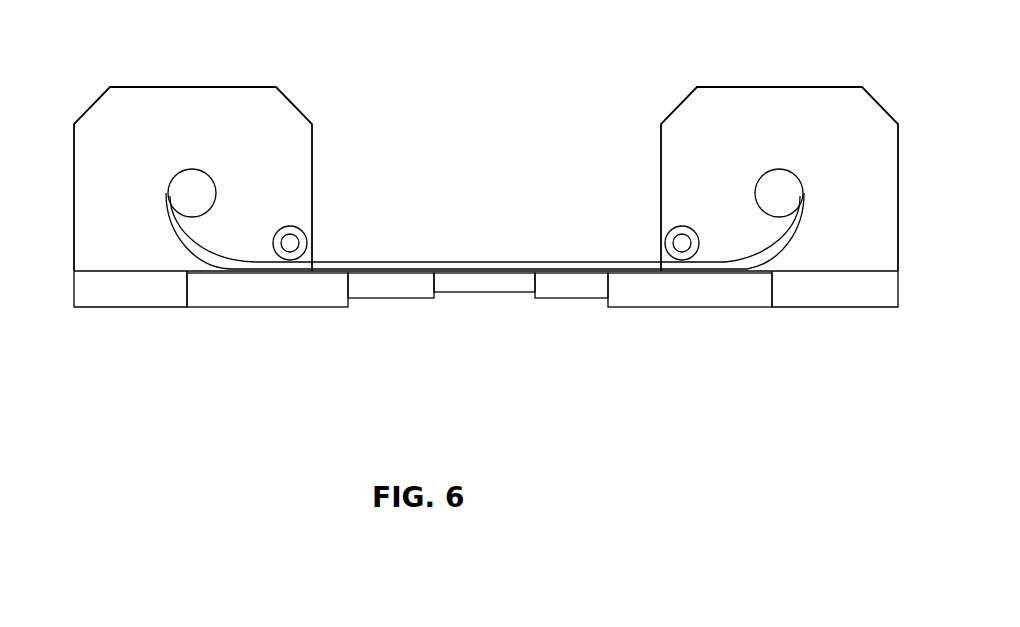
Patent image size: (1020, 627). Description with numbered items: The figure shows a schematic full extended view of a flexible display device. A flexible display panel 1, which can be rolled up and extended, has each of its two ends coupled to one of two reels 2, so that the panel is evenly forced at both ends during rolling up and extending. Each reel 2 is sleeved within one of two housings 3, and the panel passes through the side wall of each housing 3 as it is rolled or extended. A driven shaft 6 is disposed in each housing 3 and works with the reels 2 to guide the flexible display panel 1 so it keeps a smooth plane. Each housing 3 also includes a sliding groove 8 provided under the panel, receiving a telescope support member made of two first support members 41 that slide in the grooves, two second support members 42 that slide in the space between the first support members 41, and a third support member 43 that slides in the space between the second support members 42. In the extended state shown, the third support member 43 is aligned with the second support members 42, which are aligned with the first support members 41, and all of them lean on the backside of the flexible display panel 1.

The flexible display panel 1 is at (483, 262).
The reel 2 is at (192, 185).
The housing 3 is at (93, 100).
The driven shaft 6 is at (290, 243).
The sliding groove 8 is at (145, 297).
The first support member 41 is at (292, 297).
The second support member 42 is at (417, 293).
The third support member 43 is at (490, 285).